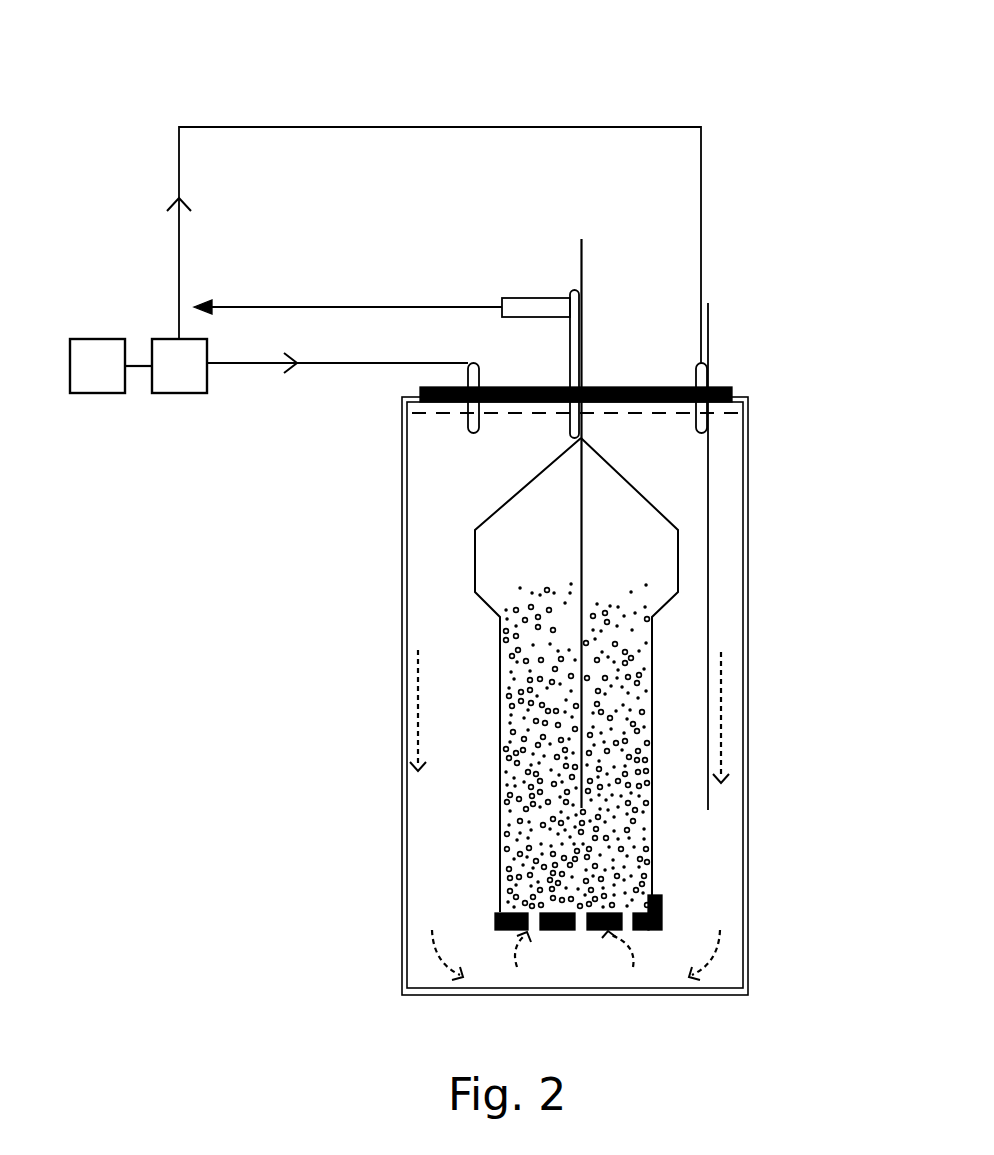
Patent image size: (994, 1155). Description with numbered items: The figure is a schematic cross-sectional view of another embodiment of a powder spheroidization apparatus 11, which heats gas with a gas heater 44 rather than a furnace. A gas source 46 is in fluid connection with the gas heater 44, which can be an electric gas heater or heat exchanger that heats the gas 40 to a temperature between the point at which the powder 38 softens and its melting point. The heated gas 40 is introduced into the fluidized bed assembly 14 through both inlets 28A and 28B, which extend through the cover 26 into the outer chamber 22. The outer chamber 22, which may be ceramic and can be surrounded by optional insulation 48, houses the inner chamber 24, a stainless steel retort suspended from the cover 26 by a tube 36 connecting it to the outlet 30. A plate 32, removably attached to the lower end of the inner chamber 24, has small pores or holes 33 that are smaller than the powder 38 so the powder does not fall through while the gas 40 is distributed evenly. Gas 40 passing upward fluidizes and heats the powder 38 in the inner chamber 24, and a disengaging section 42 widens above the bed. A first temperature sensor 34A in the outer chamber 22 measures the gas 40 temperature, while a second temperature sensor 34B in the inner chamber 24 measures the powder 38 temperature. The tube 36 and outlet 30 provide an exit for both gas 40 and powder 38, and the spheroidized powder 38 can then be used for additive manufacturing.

The powder spheroidization apparatus 11 is at (278, 76).
The fluidized bed assembly 14 is at (762, 565).
The outer chamber 22 is at (410, 789).
The inner chamber 24 is at (500, 866).
The cover 26 is at (632, 386).
The inlet 28A is at (480, 377).
The second inlet 28B is at (708, 377).
The outlet 30 is at (535, 298).
The plate 32 is at (568, 931).
The pores or holes 33 is at (630, 927).
The first temperature sensor 34A is at (708, 473).
The second temperature sensor 34B is at (582, 262).
The tube 36 is at (568, 420).
The powder 38 is at (573, 853).
The gas 40 is at (178, 245).
The disengaging section 42 is at (441, 532).
The gas heater 44 is at (167, 379).
The gas source 46 is at (84, 379).
The insulation 48 is at (400, 685).